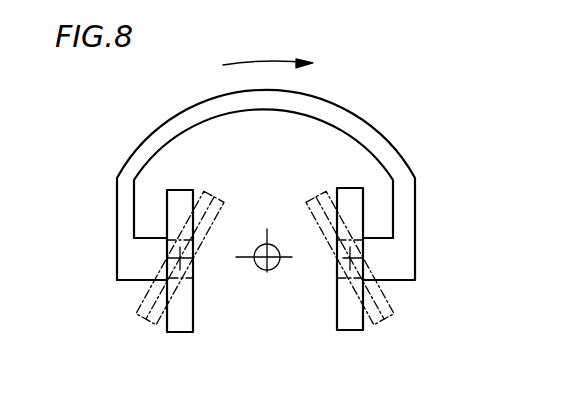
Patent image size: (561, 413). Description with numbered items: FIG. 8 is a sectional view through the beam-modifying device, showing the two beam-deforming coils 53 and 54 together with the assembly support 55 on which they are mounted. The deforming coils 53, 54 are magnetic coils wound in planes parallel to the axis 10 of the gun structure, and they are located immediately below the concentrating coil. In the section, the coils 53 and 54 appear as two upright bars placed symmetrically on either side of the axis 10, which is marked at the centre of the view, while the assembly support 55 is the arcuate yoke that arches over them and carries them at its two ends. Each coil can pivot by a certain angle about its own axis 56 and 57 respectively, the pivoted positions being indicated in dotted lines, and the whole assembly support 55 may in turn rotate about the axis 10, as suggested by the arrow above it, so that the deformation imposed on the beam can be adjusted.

The assembly support 55 is at (374, 147).
The beam-deforming coil 54 is at (183, 304).
The beam-deforming coil 53 is at (352, 307).
The axis 57 is at (168, 256).
The axis 56 is at (356, 256).
The axis of the gun structure 10 is at (265, 268).